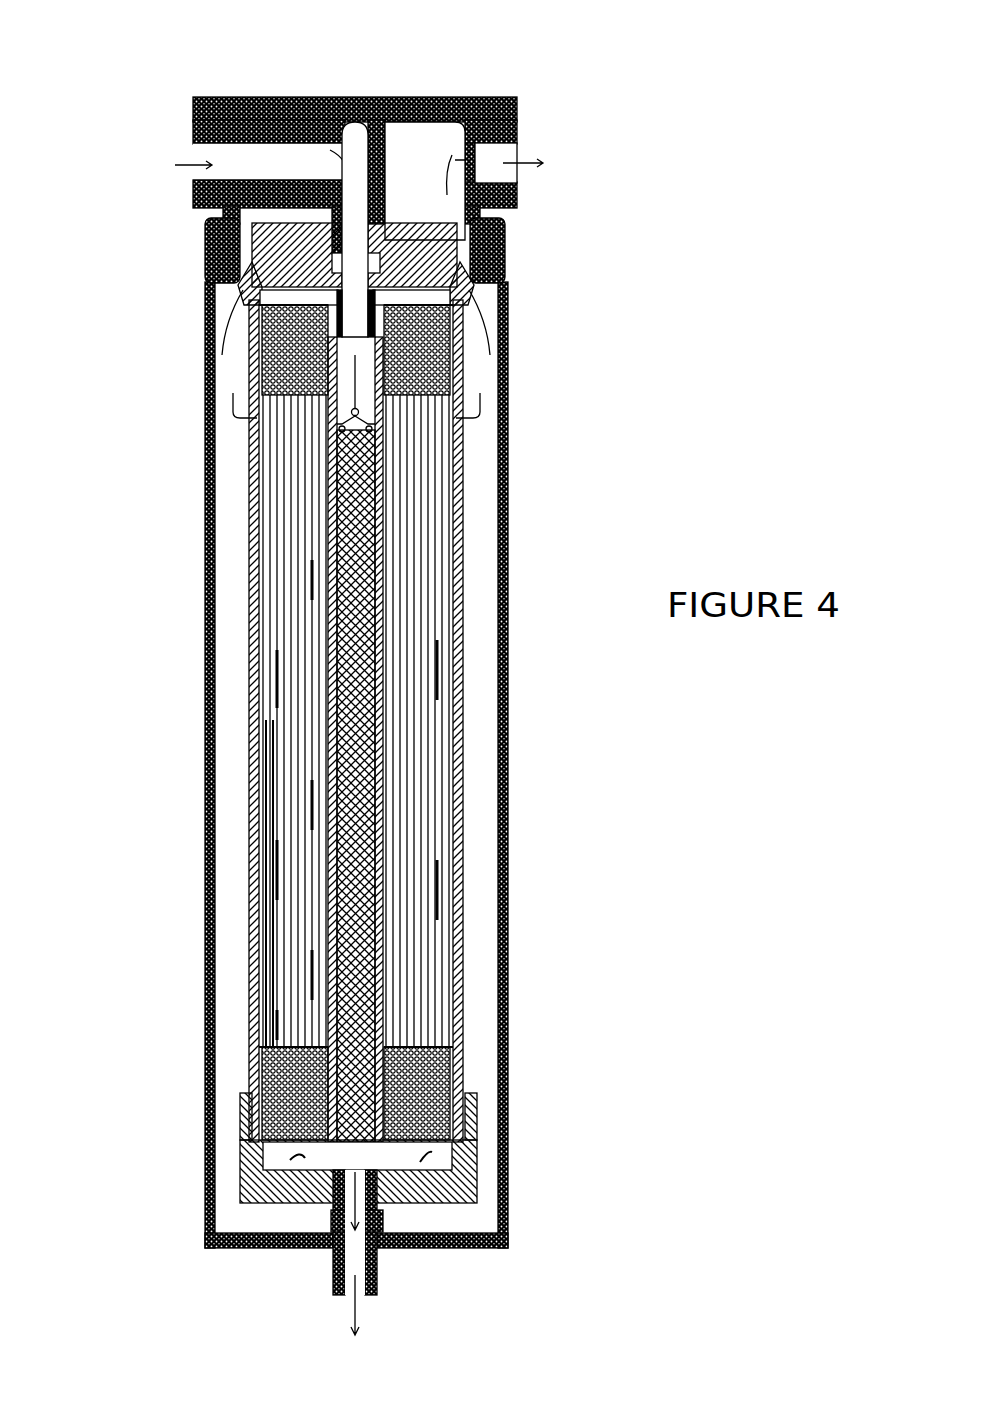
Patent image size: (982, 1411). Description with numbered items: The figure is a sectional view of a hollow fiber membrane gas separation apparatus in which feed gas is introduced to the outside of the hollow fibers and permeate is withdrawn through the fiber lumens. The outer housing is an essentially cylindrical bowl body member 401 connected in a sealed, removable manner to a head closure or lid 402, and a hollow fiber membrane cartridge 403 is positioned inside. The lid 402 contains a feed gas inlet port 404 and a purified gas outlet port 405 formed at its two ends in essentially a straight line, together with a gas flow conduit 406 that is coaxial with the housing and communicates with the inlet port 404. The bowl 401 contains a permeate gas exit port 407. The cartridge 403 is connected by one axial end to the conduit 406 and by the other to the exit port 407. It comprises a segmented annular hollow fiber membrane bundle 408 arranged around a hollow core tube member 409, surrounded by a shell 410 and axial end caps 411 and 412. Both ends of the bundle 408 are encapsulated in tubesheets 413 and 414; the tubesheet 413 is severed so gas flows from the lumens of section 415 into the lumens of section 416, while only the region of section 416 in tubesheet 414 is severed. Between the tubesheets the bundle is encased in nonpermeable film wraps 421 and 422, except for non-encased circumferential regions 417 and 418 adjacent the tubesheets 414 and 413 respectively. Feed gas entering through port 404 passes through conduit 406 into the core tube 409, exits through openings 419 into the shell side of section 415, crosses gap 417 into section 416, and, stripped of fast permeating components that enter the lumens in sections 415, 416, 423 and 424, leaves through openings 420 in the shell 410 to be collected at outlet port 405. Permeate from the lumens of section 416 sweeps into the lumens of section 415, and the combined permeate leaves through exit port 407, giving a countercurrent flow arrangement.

The bowl body member 401 is at (507, 837).
The head closure member 402 is at (383, 100).
The hollow fiber membrane cartridge 403 is at (478, 545).
The feed gas inlet port 404 is at (208, 152).
The purified gas outlet port 405 is at (499, 152).
The gas flow conduit 406 is at (347, 215).
The permeate gas exit port 407 is at (365, 1287).
The hollow fiber membrane bundle 408 is at (437, 487).
The hollow core tube member 409 is at (380, 448).
The shell 410 is at (465, 700).
The axial end cap 411 is at (507, 227).
The axial end cap 412 is at (460, 1185).
The tubesheet 413 is at (472, 330).
The tubesheet 414 is at (457, 1078).
The section 415 is at (311, 595).
The section 416 is at (279, 769).
The non-encased circumferential region 417 is at (295, 1036).
The non-encased circumferential region 418 is at (262, 452).
The openings 419 is at (335, 420).
The openings 420 is at (463, 398).
The film barrier 421 is at (289, 637).
The film barrier 422 is at (265, 838).
The section 423 is at (435, 950).
The section 424 is at (400, 1000).